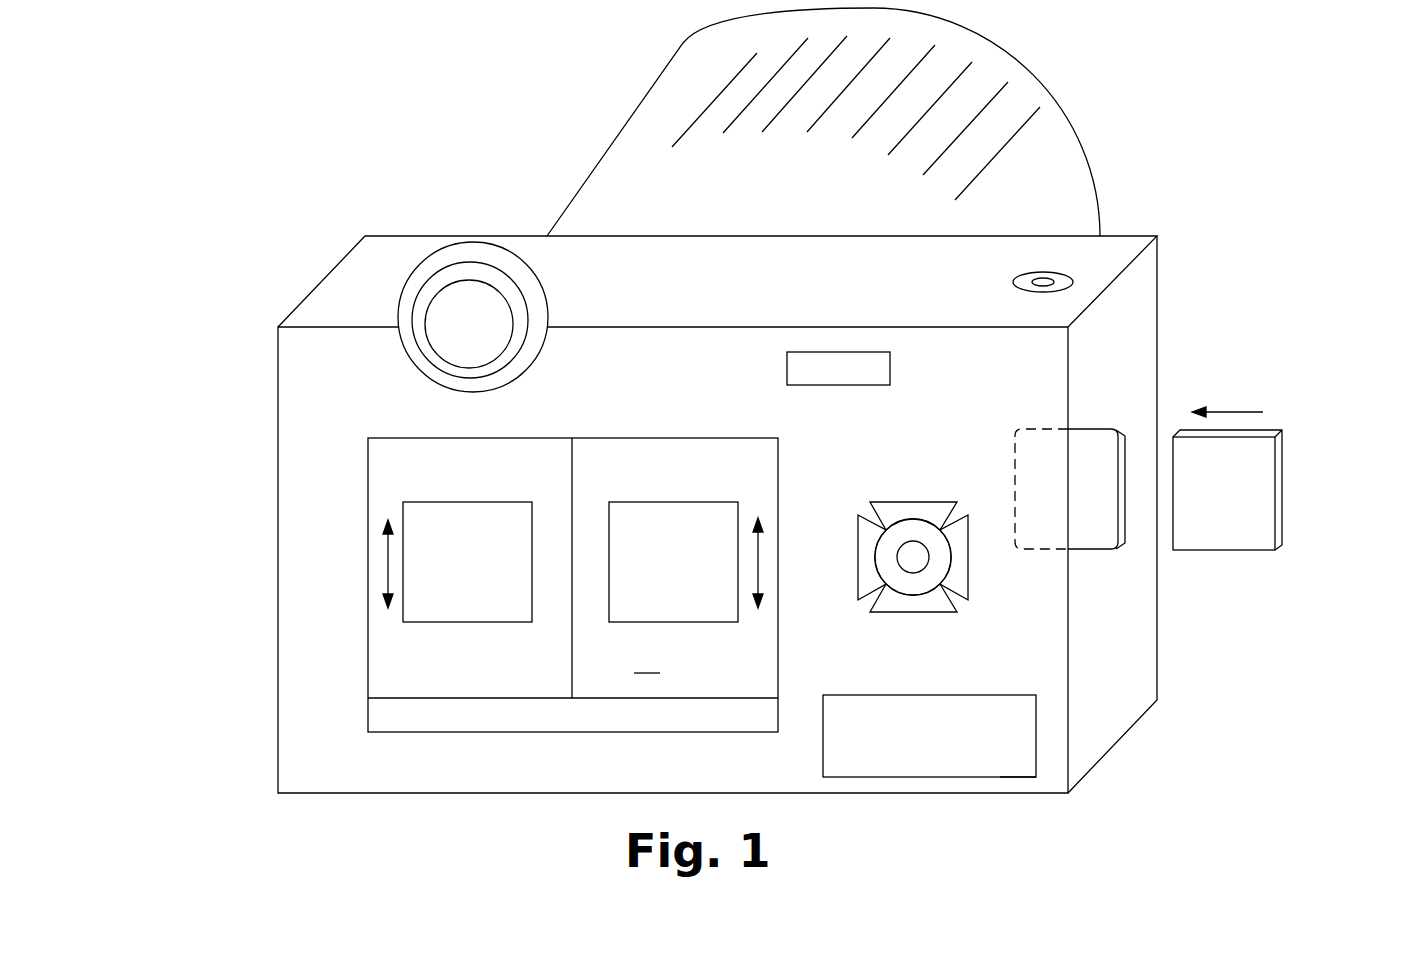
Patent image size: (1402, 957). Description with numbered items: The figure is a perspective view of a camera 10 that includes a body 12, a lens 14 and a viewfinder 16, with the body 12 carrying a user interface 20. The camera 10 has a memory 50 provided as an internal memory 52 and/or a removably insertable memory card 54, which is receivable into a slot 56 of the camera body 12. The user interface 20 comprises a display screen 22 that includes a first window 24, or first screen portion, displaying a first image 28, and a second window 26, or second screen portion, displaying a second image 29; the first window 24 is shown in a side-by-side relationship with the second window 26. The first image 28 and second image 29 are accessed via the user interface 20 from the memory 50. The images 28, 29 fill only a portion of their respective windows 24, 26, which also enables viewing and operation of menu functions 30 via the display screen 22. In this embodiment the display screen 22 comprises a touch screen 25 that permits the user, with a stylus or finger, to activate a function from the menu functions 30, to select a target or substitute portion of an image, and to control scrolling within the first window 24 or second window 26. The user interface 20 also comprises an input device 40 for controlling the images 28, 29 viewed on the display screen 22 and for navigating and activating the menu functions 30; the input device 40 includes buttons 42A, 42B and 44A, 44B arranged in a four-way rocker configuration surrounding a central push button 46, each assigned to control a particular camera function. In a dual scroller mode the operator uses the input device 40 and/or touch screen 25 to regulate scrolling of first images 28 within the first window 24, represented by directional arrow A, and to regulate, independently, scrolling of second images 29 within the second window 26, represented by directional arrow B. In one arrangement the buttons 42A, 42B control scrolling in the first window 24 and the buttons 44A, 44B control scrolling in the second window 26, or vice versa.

The camera 10 is at (428, 177).
The body 12 is at (1143, 305).
The lens 14 is at (1097, 187).
The viewfinder 16 is at (482, 250).
The user interface 20 is at (318, 445).
The display screen 22 is at (393, 437).
The first window 24 is at (380, 461).
The touch screen 25 is at (647, 660).
The second window 26 is at (772, 460).
The first image 28 is at (468, 502).
The second image 29 is at (670, 502).
The menu functions 30 is at (408, 712).
The input device 40 is at (913, 618).
The button 42A is at (906, 501).
The button 42B is at (880, 613).
The button 44A is at (858, 560).
The button 44B is at (968, 555).
The central push button 46 is at (912, 553).
The memory 50 is at (973, 781).
The internal memory 52 is at (1013, 780).
The memory card 54 is at (1260, 466).
The slot 56 is at (1085, 429).
The directional arrow A is at (388, 567).
The directional arrow B is at (758, 558).